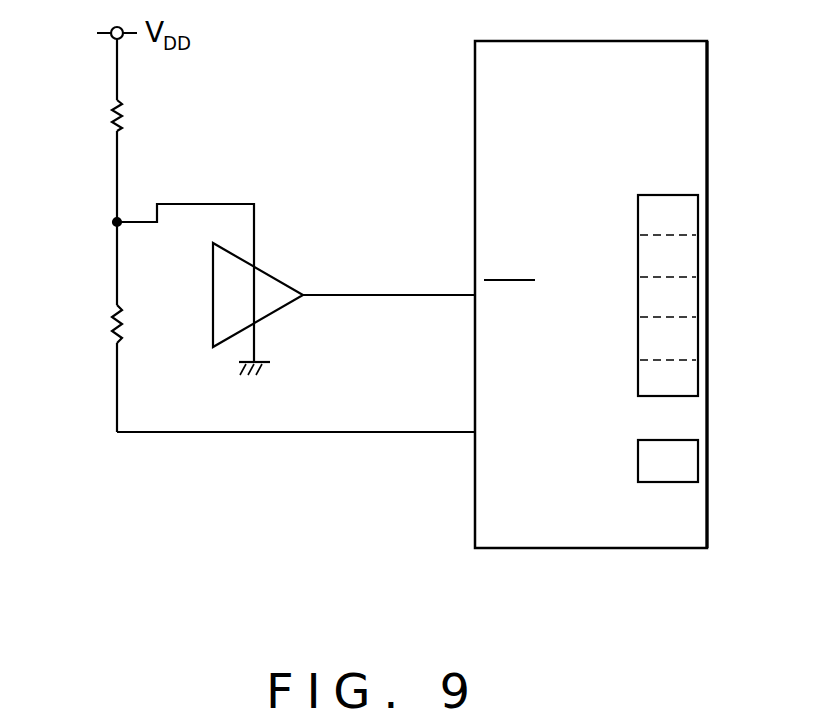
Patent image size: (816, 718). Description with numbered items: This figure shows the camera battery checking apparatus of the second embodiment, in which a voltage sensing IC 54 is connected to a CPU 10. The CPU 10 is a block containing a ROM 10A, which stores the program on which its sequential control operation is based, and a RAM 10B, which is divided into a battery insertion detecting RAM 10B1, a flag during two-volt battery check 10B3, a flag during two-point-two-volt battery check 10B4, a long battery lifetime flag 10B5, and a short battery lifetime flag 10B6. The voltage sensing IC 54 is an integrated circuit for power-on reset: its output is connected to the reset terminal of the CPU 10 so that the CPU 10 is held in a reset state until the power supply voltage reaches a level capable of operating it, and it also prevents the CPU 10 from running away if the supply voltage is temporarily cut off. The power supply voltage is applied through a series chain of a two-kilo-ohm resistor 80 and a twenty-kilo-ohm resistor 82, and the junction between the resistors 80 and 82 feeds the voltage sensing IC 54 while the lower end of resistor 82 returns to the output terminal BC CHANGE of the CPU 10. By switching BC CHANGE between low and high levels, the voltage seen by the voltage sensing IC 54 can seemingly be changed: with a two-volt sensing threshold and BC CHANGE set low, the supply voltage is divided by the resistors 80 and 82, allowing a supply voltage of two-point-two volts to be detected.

The CPU 10 is at (707, 88).
The ROM 10A is at (694, 458).
The RAM 10B is at (672, 195).
The battery insertion detecting RAM 10B1 is at (690, 218).
The flag during 2 V battery check 10B3 is at (690, 258).
The flag during 2.2 V battery check 10B4 is at (690, 298).
The long battery lifetime flag 10B5 is at (690, 340).
The short battery lifetime flag 10B6 is at (690, 380).
The voltage sensing IC 54 is at (279, 281).
The resistor 80 is at (110, 120).
The resistor 82 is at (110, 323).